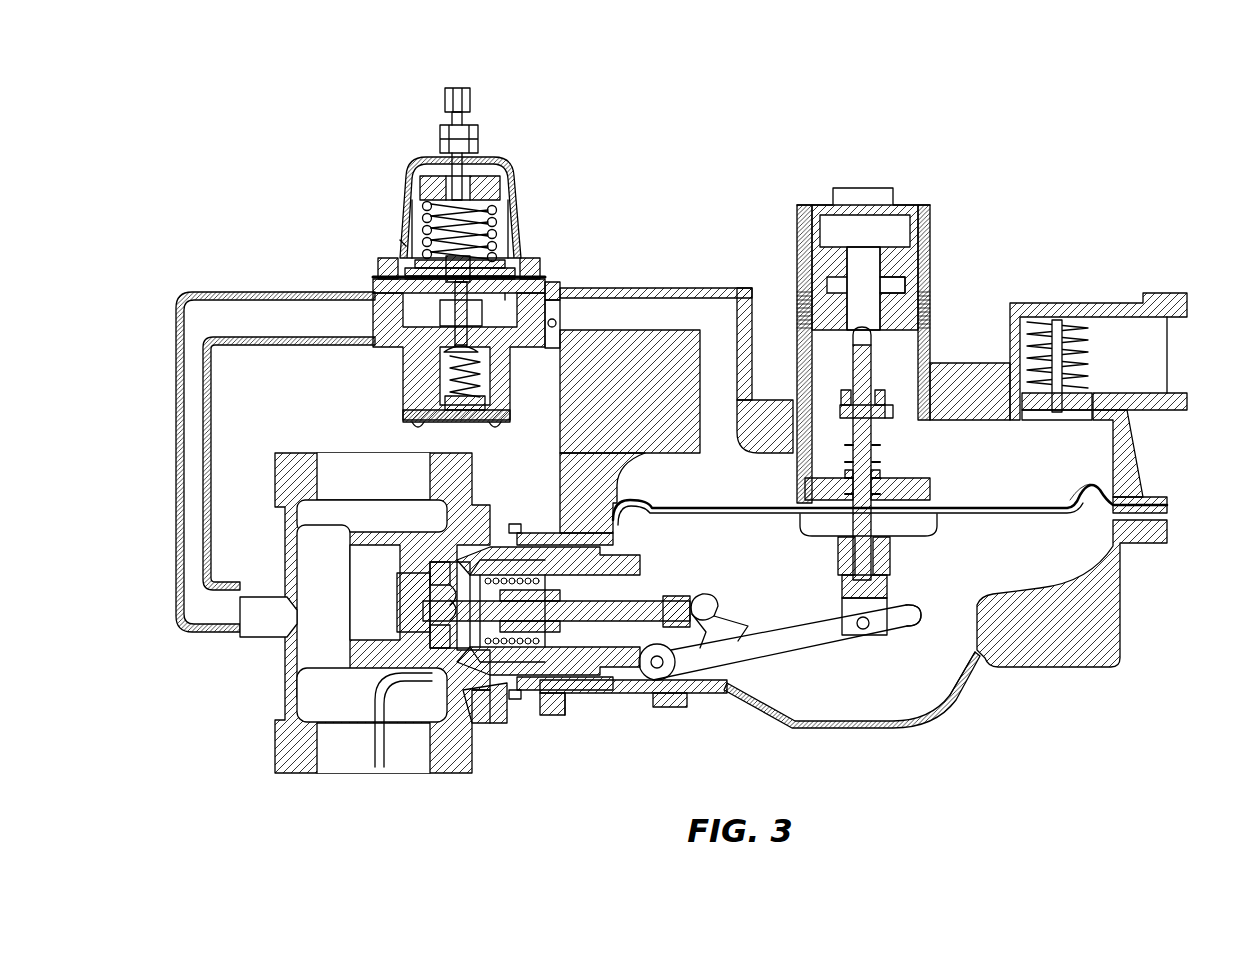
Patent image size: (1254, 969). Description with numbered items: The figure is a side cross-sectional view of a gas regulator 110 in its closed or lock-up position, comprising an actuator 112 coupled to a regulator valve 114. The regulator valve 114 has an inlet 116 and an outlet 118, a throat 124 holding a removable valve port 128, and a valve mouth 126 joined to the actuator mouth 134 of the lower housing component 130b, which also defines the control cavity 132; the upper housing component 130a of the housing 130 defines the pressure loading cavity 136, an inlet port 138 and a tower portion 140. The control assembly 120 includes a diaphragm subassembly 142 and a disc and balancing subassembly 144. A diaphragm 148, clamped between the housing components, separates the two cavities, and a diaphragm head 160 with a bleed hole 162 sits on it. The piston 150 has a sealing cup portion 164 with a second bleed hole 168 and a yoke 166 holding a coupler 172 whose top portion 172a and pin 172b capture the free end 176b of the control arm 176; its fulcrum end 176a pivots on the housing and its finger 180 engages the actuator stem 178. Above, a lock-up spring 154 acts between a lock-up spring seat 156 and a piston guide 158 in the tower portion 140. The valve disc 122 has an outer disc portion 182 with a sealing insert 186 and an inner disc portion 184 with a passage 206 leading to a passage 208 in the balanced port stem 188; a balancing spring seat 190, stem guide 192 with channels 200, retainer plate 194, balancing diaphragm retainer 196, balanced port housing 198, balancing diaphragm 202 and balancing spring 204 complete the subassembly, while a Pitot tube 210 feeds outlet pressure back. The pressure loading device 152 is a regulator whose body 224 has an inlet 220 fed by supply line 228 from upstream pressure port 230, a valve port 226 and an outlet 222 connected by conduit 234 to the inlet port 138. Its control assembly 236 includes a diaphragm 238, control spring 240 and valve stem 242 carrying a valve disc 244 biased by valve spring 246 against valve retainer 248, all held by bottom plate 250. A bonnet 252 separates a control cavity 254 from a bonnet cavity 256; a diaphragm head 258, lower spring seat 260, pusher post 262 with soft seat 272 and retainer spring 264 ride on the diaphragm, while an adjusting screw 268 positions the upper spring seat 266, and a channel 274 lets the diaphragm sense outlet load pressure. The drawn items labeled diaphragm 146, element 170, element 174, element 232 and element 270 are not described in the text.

The gas regulator 110 is at (964, 182).
The actuator 112 is at (932, 308).
The regulator valve 114 is at (252, 721).
The inlet 116 is at (325, 462).
The outlet 118 is at (318, 760).
The control assembly 120 is at (921, 540).
The valve disc 122 is at (413, 568).
The throat 124 is at (342, 640).
The valve mouth 126 is at (490, 710).
The valve port 128 is at (372, 600).
The housing 130 is at (1110, 660).
The upper housing component 130a is at (800, 236).
The lower housing component 130b is at (895, 730).
The control cavity 132 is at (960, 712).
The actuator mouth 134 is at (583, 706).
The pressure loading cavity 136 is at (1110, 466).
The inlet port 138 is at (1188, 318).
The tower portion 140 is at (912, 245).
The diaphragm subassembly 142 is at (1018, 529).
The disc and balancing subassembly 144 is at (545, 527).
The diaphragm 146 is at (1090, 361).
The diaphragm 148 is at (1080, 495).
The piston 150 is at (862, 450).
The pressure loading device 152 is at (556, 104).
The lock-up spring 154 is at (885, 437).
The lock-up spring seat 156 is at (830, 482).
The piston guide 158 is at (900, 418).
The diaphragm head 160 is at (890, 285).
The bleed hole 162 is at (860, 260).
The sealing cup portion 164 is at (804, 535).
The yoke 166 is at (903, 548).
The second bleed hole 168 is at (857, 380).
The stem tip 170 is at (870, 355).
The coupler 172 is at (897, 596).
The top portion 172a is at (838, 588).
The pin 172b is at (863, 630).
The spring retainer 174 is at (880, 400).
The control arm 176 is at (718, 648).
The fulcrum end 176a is at (672, 672).
The free end 176b is at (914, 626).
The actuator stem 178 is at (686, 598).
The finger 180 is at (718, 600).
The outer disc portion 182 is at (420, 665).
The inner disc portion 184 is at (400, 612).
The sealing insert 186 is at (362, 580).
The balanced port stem 188 is at (508, 555).
The balancing spring seat 190 is at (562, 696).
The stem guide 192 is at (603, 565).
The retainer plate 194 is at (492, 520).
The balancing diaphragm retainer 196 is at (462, 730).
The balanced port housing 198 is at (446, 563).
The channels 200 is at (603, 580).
The balancing diaphragm 202 is at (482, 540).
The balancing spring 204 is at (556, 716).
The passage 206 is at (445, 660).
The passage 208 is at (493, 713).
The Pitot tube 210 is at (385, 752).
The inlet 220 is at (400, 320).
The outlet 222 is at (548, 352).
The body 224 is at (380, 298).
The valve port 226 is at (562, 286).
The upstream pressure supply line 228 is at (220, 443).
The upstream pressure port 230 is at (232, 635).
The pilot outlet body 232 is at (672, 300).
The conduit 234 is at (556, 330).
The control assembly 236 is at (432, 215).
The diaphragm 238 is at (400, 272).
The control spring 240 is at (413, 212).
The valve stem 242 is at (432, 318).
The valve disc 244 is at (447, 345).
The valve spring 246 is at (453, 372).
The valve retainer 248 is at (455, 396).
The bottom plate 250 is at (445, 421).
The bonnet 252 is at (508, 160).
The control cavity 254 is at (385, 282).
The bonnet cavity 256 is at (502, 200).
The diaphragm head 258 is at (420, 262).
The lower spring seat 260 is at (402, 240).
The pusher post 262 is at (444, 222).
The retainer spring 264 is at (465, 276).
The upper spring seat 266 is at (518, 175).
The adjusting screw 268 is at (481, 97).
The adjustment screw 270 is at (448, 150).
The soft seat 272 is at (480, 262).
The channel 274 is at (507, 285).